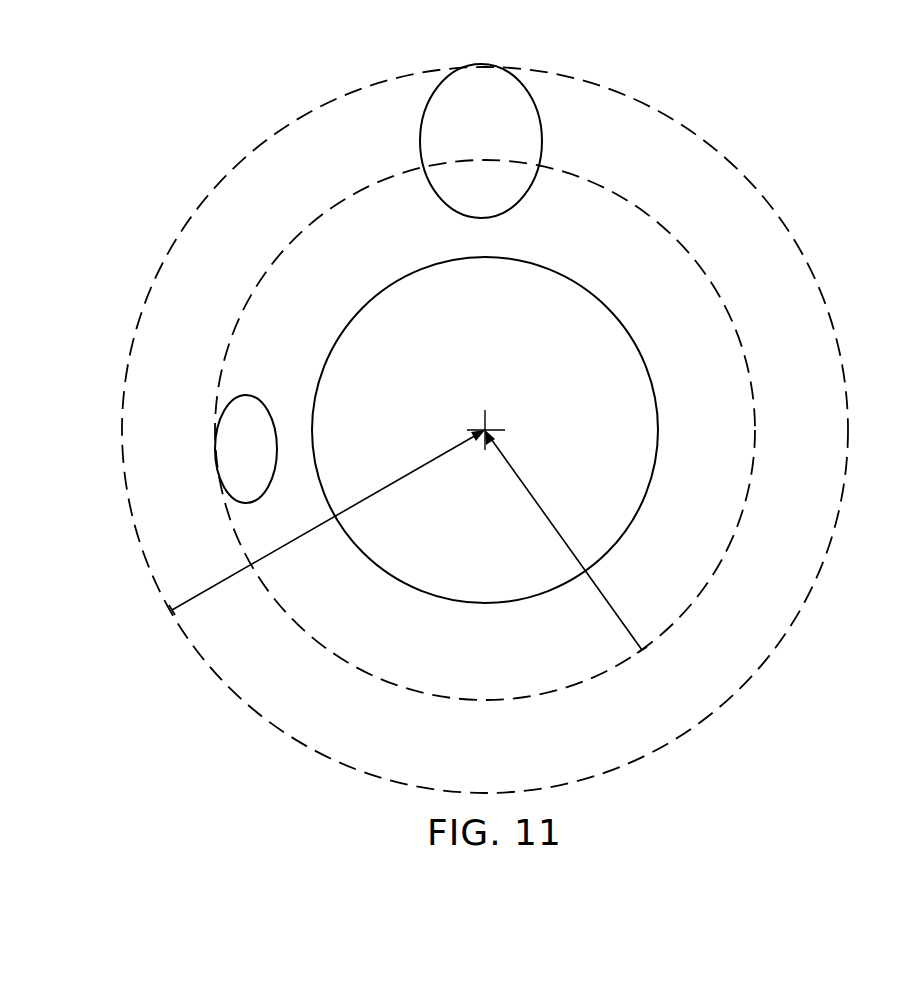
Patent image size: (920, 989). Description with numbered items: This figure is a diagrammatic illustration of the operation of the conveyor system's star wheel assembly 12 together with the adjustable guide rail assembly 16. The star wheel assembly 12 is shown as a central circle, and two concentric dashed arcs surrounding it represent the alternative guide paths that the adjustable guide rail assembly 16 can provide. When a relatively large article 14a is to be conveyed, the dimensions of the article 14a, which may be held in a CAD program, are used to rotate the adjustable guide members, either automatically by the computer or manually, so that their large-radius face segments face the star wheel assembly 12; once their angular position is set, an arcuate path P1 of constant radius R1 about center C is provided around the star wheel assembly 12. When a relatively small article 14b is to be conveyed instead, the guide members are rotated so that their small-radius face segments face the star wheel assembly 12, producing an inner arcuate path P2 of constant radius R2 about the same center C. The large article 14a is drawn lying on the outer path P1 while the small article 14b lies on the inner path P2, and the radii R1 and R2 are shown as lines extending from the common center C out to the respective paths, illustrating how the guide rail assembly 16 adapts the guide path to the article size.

The star wheel assembly 12 is at (670, 388).
The article 14a is at (520, 126).
The article 14b is at (234, 431).
The adjustable guide rail assembly 16 is at (820, 630).
The arcuate path P1 is at (278, 134).
The arcuate path P2 is at (312, 640).
The radius R1 is at (382, 492).
The radius R2 is at (535, 480).
The center C is at (487, 424).